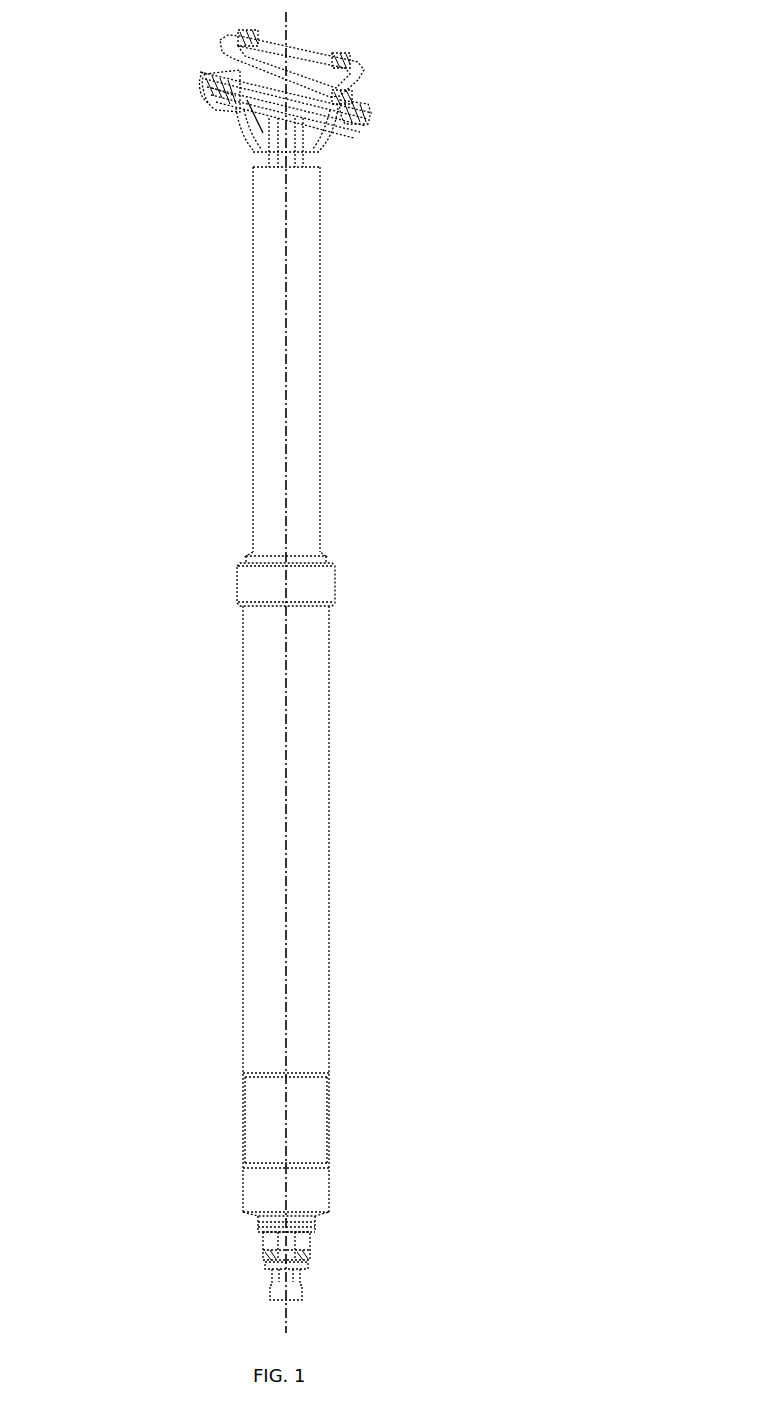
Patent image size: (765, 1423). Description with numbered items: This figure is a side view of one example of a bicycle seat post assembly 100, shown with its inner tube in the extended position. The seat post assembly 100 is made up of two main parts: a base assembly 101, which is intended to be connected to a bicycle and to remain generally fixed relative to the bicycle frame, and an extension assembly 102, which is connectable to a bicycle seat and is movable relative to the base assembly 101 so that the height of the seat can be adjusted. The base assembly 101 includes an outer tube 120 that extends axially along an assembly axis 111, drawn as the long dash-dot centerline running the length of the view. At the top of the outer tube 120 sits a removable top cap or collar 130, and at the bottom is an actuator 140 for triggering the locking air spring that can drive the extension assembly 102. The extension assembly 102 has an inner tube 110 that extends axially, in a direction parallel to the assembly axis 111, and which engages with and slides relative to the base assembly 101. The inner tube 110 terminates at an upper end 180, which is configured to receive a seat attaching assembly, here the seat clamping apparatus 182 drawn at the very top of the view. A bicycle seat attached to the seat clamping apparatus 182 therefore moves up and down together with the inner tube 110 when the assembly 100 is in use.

The bicycle seat post assembly 100 is at (378, 58).
The base assembly 101 is at (384, 810).
The extension assembly 102 is at (375, 376).
The inner tube 110 is at (321, 307).
The assembly axis 111 is at (285, 320).
The outer tube 120 is at (329, 765).
The collar 130 is at (334, 577).
The actuator 140 is at (305, 1245).
The upper end 180 is at (323, 167).
The seat clamping apparatus 182 is at (220, 88).